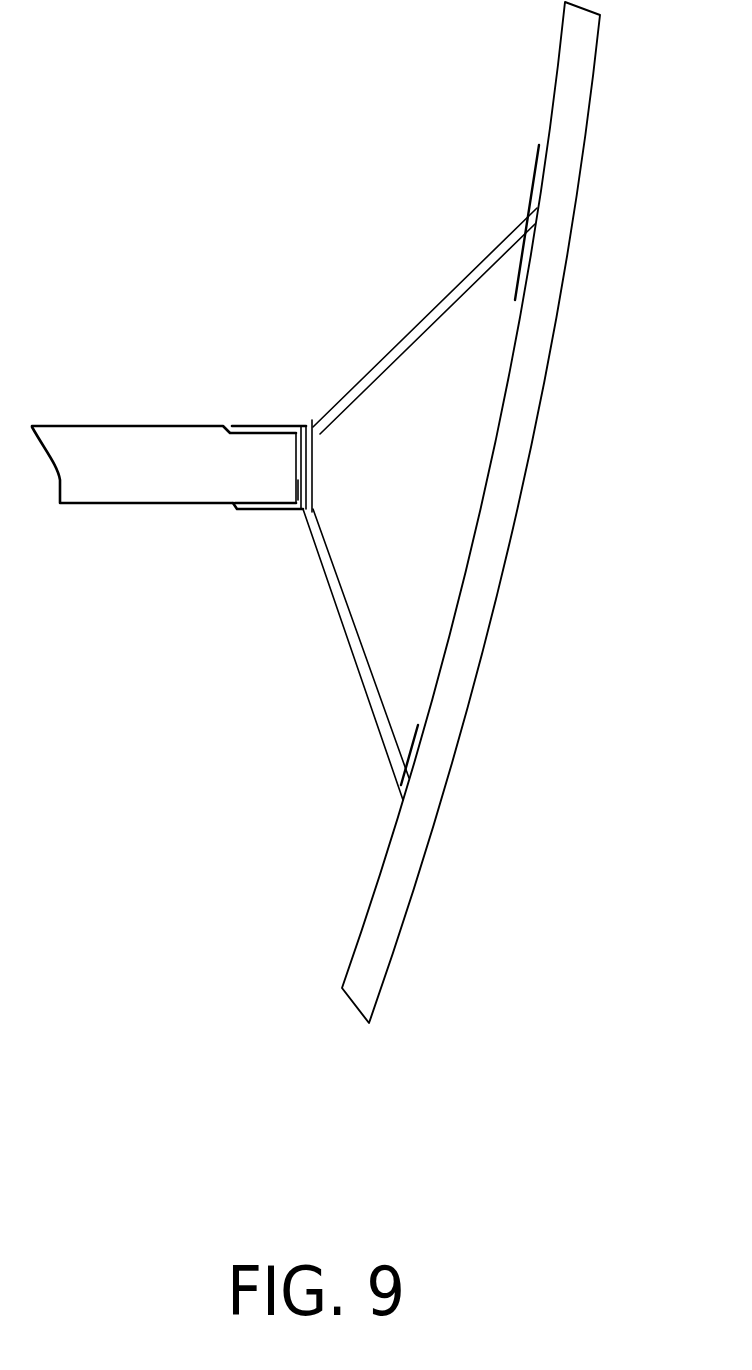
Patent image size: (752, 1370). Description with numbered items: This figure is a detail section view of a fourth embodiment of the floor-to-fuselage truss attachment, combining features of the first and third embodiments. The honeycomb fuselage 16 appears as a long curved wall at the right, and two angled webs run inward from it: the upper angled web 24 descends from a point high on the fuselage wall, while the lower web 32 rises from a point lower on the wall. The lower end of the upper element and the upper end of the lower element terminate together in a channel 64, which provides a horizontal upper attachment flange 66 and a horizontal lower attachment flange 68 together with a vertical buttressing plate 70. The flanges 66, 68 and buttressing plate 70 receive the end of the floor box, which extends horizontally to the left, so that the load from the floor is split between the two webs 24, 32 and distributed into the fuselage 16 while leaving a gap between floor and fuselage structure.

The honeycomb fuselage 16 is at (353, 947).
The angled web 24 is at (397, 337).
The web 32 is at (347, 655).
The channel 64 is at (318, 472).
The upper attachment flange 66 is at (265, 420).
The lower attachment flange 68 is at (273, 513).
The vertical buttressing plate 70 is at (305, 488).